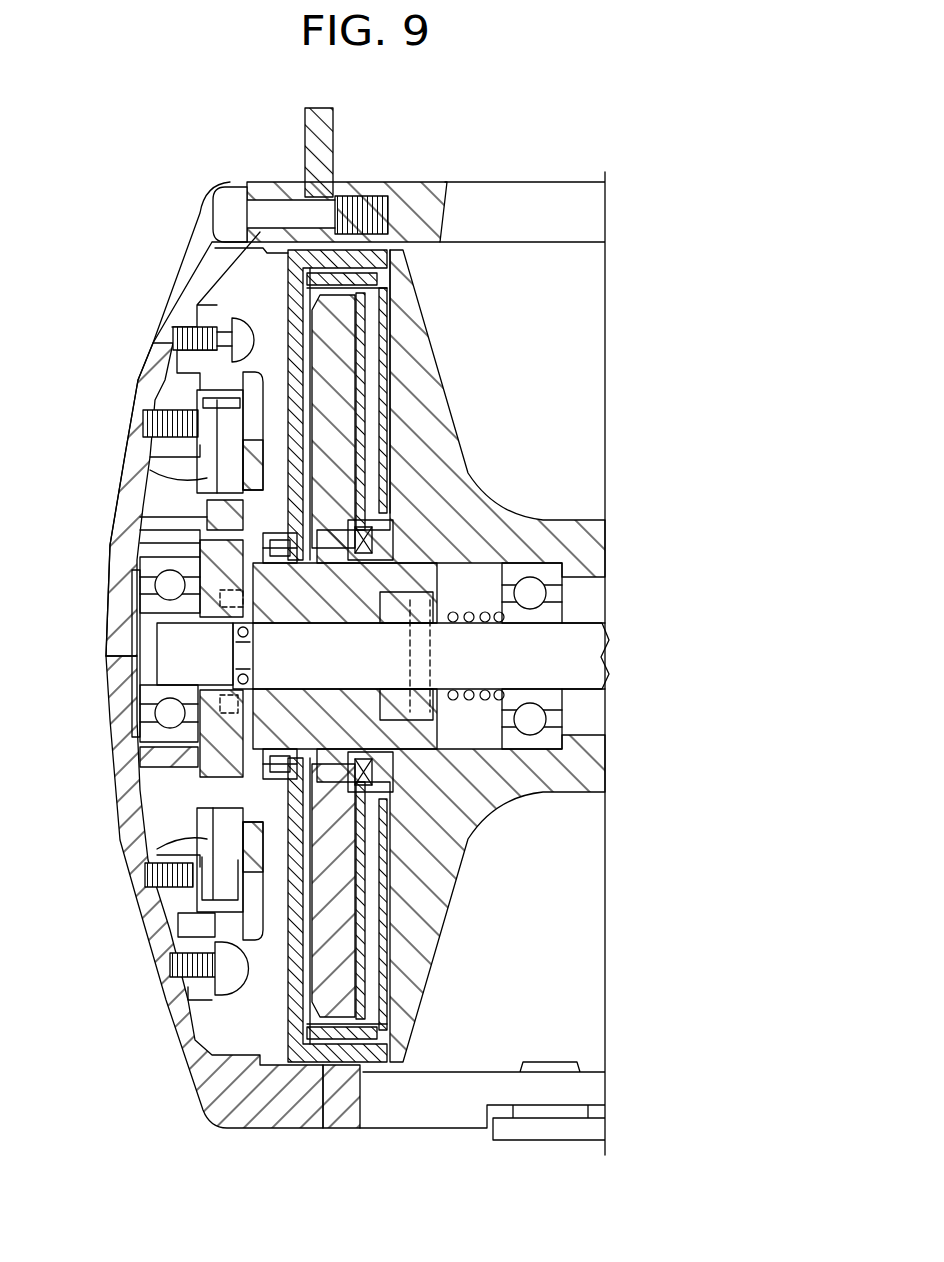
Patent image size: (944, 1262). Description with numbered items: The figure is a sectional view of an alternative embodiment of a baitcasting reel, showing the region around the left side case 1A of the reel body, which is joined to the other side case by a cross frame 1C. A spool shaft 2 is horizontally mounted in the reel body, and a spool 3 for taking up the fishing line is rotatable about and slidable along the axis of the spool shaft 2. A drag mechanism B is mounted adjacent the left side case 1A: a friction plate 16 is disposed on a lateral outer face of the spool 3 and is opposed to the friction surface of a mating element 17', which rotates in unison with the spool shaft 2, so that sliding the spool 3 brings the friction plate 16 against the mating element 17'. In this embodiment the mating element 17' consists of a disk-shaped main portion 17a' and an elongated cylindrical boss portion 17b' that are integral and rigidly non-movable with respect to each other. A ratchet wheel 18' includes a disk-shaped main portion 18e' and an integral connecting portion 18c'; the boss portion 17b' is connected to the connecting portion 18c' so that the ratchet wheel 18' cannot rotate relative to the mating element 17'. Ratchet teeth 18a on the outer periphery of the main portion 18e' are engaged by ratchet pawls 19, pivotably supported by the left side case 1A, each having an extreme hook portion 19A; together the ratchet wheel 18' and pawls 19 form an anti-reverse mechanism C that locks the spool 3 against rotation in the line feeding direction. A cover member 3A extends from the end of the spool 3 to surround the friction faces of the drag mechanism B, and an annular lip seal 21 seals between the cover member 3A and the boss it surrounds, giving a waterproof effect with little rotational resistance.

The left side case 1A is at (173, 272).
The cross frame 1C is at (505, 192).
The spool shaft 2 is at (431, 656).
The spool 3 is at (553, 780).
The cover member 3A is at (290, 281).
The friction plate 16 is at (388, 373).
The mating element 17' is at (411, 415).
The disk-shaped main portion 17a' is at (413, 891).
The elongated cylindrical boss portion 17b' is at (162, 746).
The ratchet wheel 18' is at (195, 648).
The outer circumferential teeth 18a is at (145, 516).
The connecting portion 18c' is at (288, 645).
The disk-shaped main portion 18e' is at (129, 658).
The ratchet pawl 19 is at (155, 460).
The hook portion 19A is at (120, 572).
The annular lip seal 21 is at (318, 618).
The drag mechanism B is at (389, 443).
The anti-reverse mechanism C is at (187, 497).